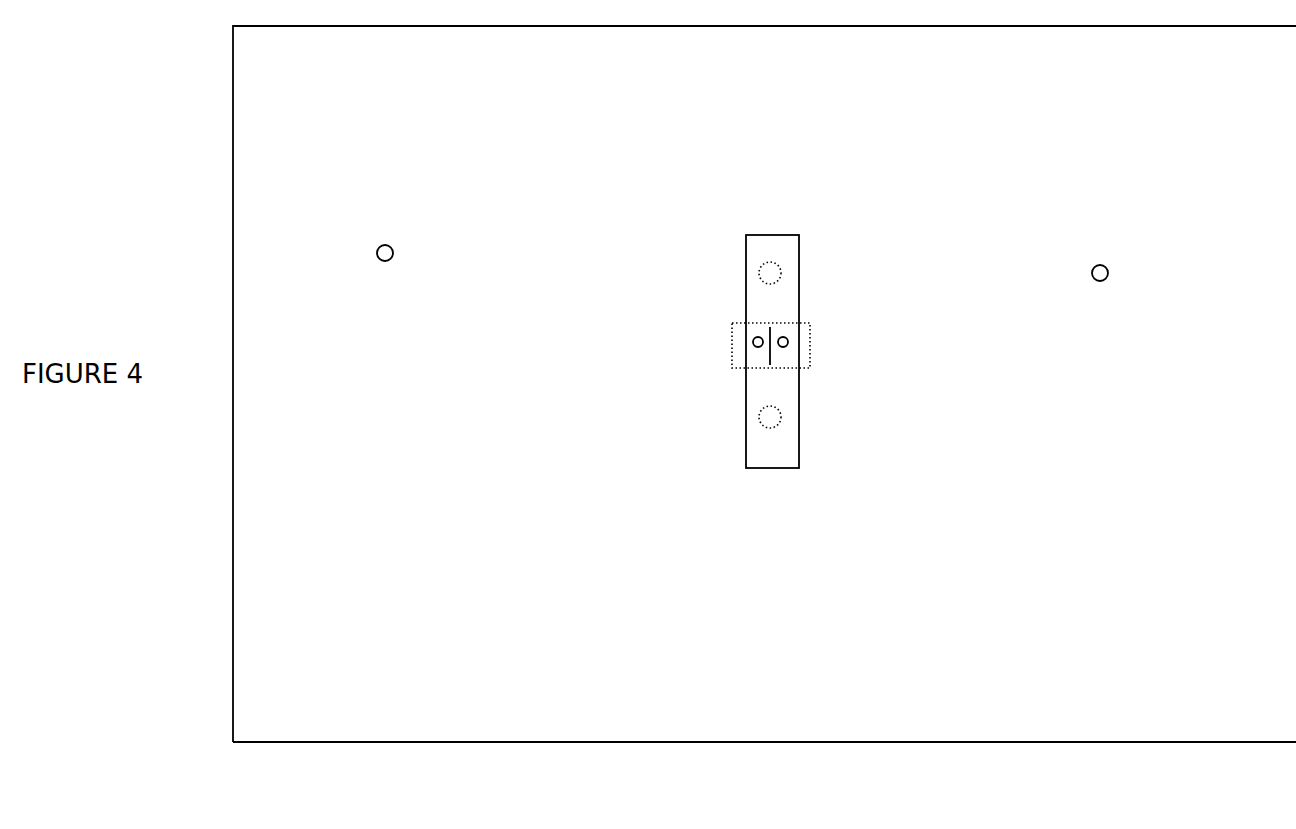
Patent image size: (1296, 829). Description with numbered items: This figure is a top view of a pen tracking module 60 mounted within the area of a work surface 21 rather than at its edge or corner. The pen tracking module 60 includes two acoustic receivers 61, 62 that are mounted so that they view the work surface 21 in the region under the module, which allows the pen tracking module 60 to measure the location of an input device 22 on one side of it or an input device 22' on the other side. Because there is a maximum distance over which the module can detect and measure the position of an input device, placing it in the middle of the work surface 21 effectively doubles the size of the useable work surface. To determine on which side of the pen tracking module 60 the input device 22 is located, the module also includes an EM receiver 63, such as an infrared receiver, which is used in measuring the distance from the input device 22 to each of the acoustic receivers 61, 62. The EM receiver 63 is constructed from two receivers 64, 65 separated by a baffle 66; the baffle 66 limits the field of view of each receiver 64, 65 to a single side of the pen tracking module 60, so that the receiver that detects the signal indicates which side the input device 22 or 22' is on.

The work surface 21 is at (881, 559).
The input device 22 is at (1112, 310).
The input device 22' is at (400, 290).
The pen tracking module 60 is at (765, 234).
The acoustic receiver 61 is at (778, 420).
The acoustic receiver 62 is at (768, 262).
The EM receiver 63 is at (801, 320).
The receiver 64 is at (786, 347).
The receiver 65 is at (756, 347).
The baffle 66 is at (770, 336).